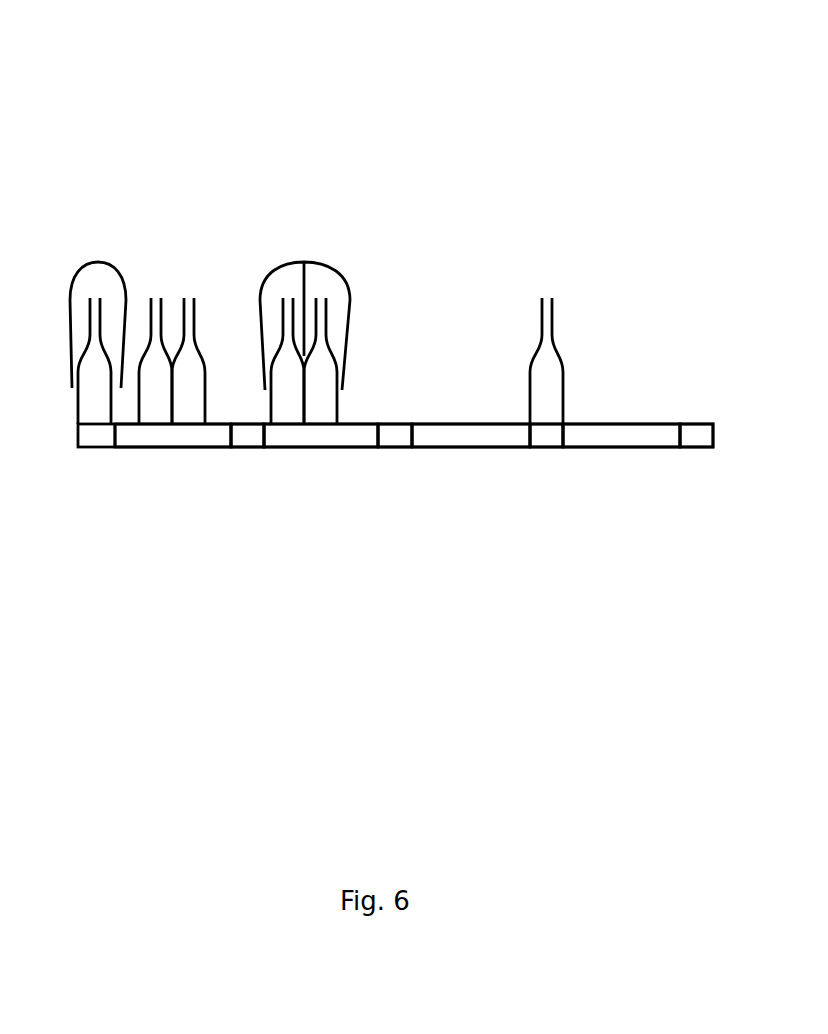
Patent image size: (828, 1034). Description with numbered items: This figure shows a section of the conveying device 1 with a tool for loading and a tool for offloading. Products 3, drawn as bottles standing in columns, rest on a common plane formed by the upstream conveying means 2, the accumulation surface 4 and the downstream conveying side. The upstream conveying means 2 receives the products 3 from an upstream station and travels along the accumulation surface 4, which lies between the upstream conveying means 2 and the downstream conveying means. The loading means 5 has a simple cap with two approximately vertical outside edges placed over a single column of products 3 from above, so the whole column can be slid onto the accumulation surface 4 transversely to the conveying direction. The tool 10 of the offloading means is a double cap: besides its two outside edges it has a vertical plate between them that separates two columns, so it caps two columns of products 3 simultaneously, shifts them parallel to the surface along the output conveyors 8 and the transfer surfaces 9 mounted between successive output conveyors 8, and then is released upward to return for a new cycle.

The conveying device 1 is at (318, 98).
The upstream conveying means 2 is at (89, 484).
The products 3 is at (89, 364).
The accumulation surface 4 is at (171, 486).
The loading means 5 is at (74, 234).
The output conveyors 8 is at (252, 442).
The transfer surface 9 is at (319, 440).
The tool 10 is at (341, 243).